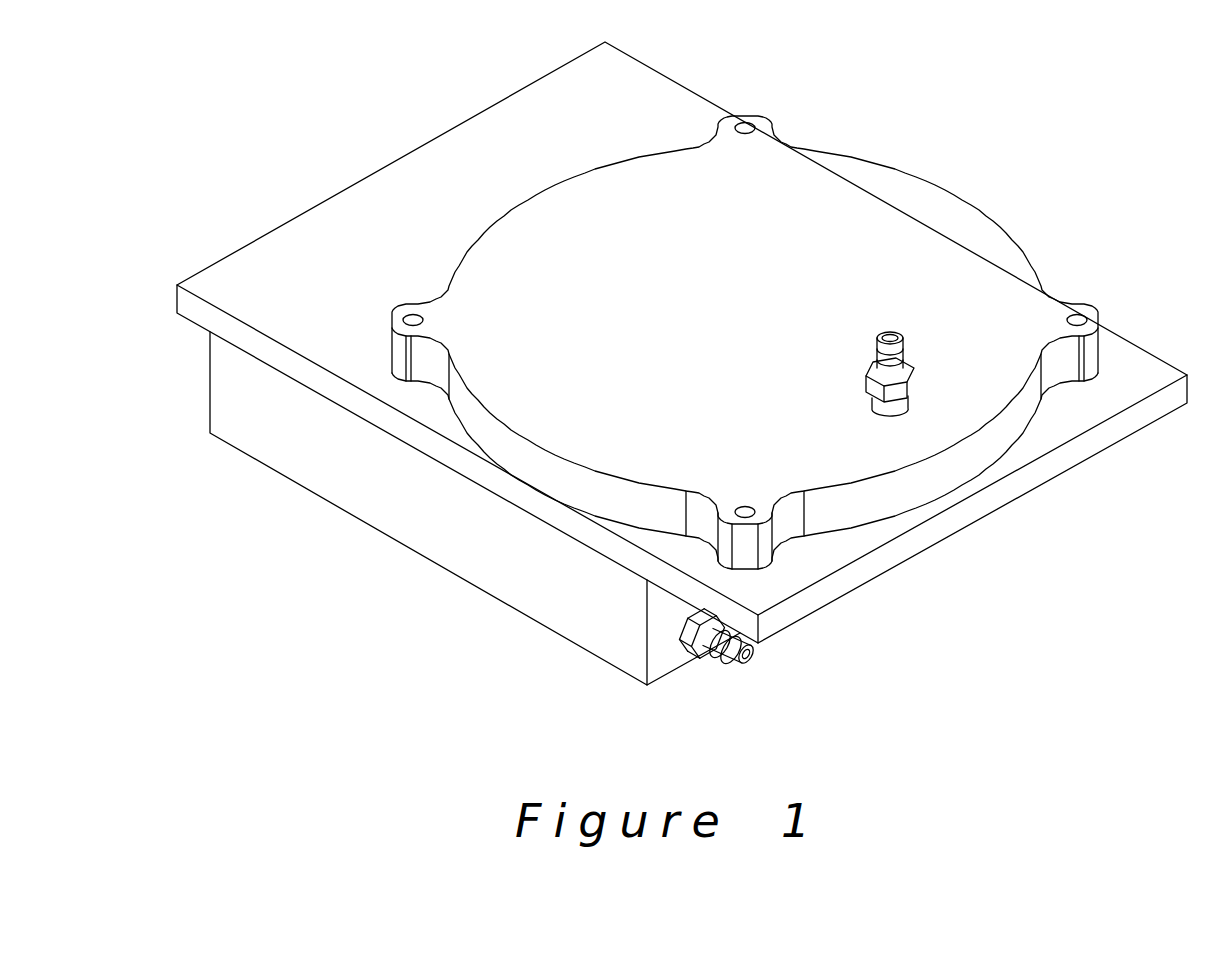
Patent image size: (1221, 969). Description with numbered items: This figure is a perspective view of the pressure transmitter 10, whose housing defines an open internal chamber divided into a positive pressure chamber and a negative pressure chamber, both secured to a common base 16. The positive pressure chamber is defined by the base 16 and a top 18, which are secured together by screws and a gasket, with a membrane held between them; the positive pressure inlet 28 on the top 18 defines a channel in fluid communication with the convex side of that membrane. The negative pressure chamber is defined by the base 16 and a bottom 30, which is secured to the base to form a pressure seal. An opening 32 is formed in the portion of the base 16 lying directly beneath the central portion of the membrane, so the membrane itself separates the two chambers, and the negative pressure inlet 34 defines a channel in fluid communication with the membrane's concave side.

The pressure transmitter 10 is at (385, 137).
The base 16 is at (942, 525).
The top 18 is at (818, 218).
The positive pressure inlet 28 is at (897, 327).
The bottom 30 is at (465, 541).
The opening 32 is at (752, 657).
The negative pressure inlet 34 is at (718, 660).